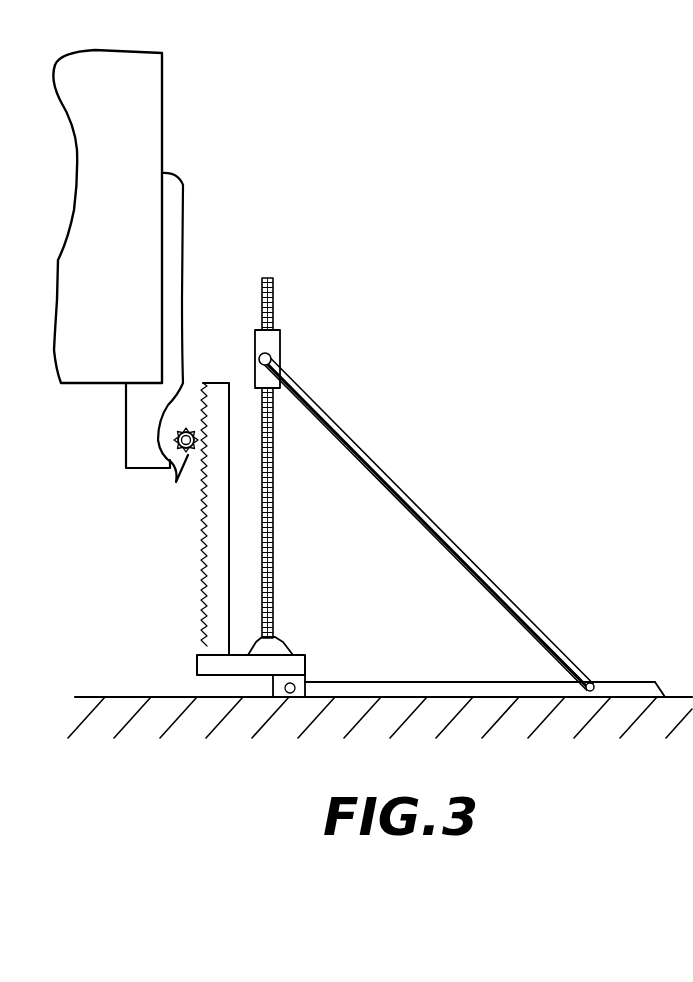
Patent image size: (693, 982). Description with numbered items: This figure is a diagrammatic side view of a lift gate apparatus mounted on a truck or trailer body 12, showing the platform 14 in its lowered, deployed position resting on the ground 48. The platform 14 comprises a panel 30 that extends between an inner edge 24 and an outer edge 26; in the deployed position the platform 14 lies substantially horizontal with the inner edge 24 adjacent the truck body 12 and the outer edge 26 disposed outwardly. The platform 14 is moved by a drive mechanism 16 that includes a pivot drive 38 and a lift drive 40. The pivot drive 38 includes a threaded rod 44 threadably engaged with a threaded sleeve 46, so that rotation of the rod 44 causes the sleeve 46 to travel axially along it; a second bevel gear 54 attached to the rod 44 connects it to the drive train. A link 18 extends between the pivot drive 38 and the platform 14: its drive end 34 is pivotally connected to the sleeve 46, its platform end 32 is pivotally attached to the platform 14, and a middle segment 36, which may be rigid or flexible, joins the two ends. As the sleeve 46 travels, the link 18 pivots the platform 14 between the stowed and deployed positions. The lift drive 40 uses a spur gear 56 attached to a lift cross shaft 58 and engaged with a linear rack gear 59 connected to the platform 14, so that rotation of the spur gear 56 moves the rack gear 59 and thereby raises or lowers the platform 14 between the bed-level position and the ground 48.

The truck or trailer body 12 is at (163, 128).
The platform 14 is at (488, 675).
The drive mechanism 16 is at (119, 490).
The link 18 is at (428, 523).
The inner edge 24 is at (307, 680).
The outer edge 26 is at (661, 691).
The panel 30 is at (628, 673).
The platform end 32 is at (595, 682).
The drive end 34 is at (271, 357).
The middle segment 36 is at (420, 506).
The pivot drive 38 is at (428, 502).
The lift drive 40 is at (167, 485).
The threaded rod 44 is at (275, 532).
The threaded sleeve 46 is at (280, 330).
The ground 48 is at (160, 697).
The second bevel gear 54 is at (284, 640).
The spur gear 56 is at (178, 478).
The lift cross shaft 58 is at (190, 428).
The linear rack gear 59 is at (200, 612).